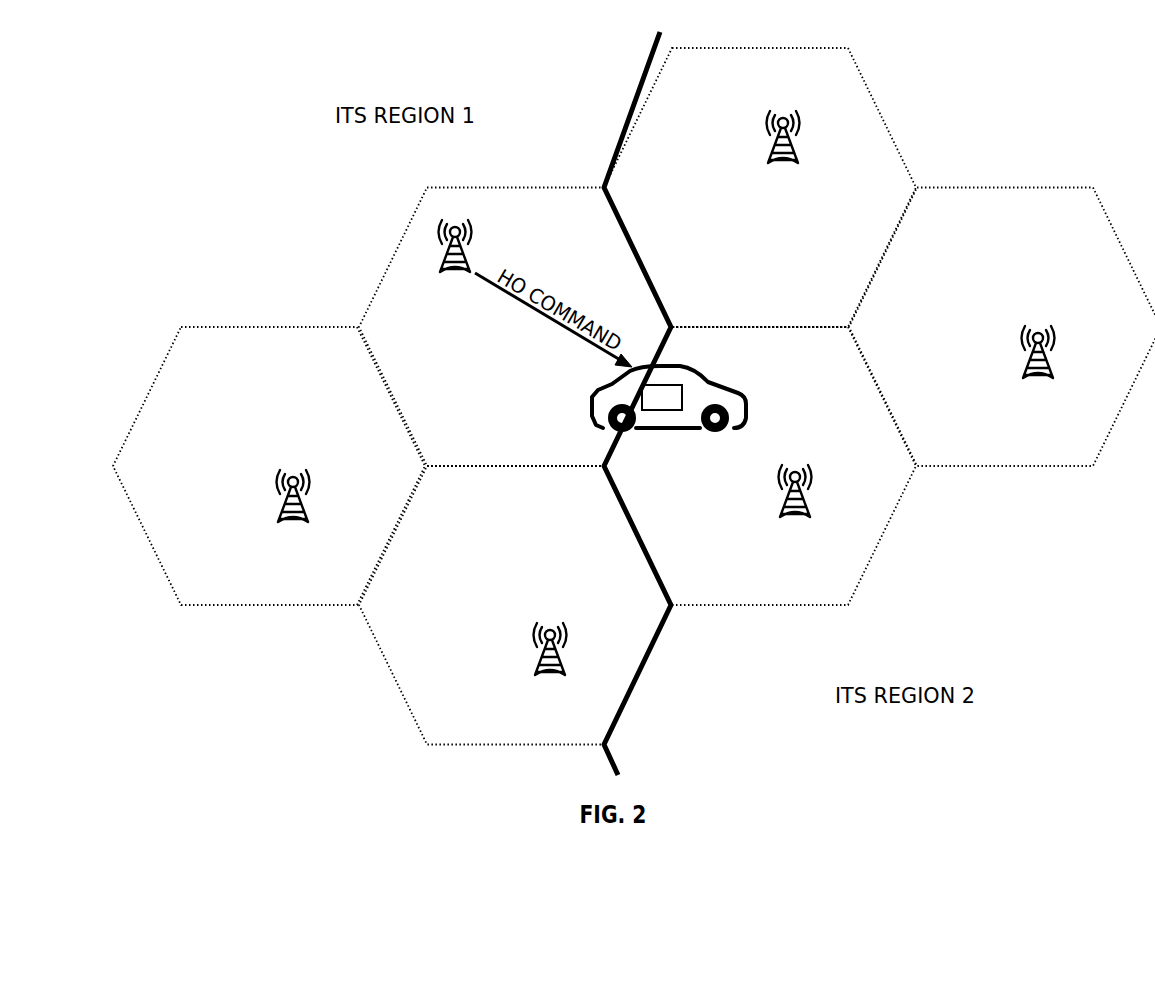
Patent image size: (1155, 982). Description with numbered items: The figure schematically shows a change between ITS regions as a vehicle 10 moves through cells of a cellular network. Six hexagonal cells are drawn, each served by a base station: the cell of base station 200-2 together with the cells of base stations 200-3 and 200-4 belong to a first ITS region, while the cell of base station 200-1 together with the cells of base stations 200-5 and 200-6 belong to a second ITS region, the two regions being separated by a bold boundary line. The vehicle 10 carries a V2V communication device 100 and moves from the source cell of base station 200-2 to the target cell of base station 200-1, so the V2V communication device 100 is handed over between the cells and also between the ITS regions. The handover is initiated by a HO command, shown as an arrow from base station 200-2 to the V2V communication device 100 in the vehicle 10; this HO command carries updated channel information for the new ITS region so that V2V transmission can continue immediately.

The vehicle 10 is at (669, 423).
The V2V communication device 100 is at (648, 406).
The base station 200-1 is at (782, 508).
The base station 200-2 is at (468, 260).
The base station 200-3 is at (281, 510).
The base station 200-4 is at (537, 665).
The base station 200-5 is at (771, 157).
The base station 200-6 is at (1027, 368).